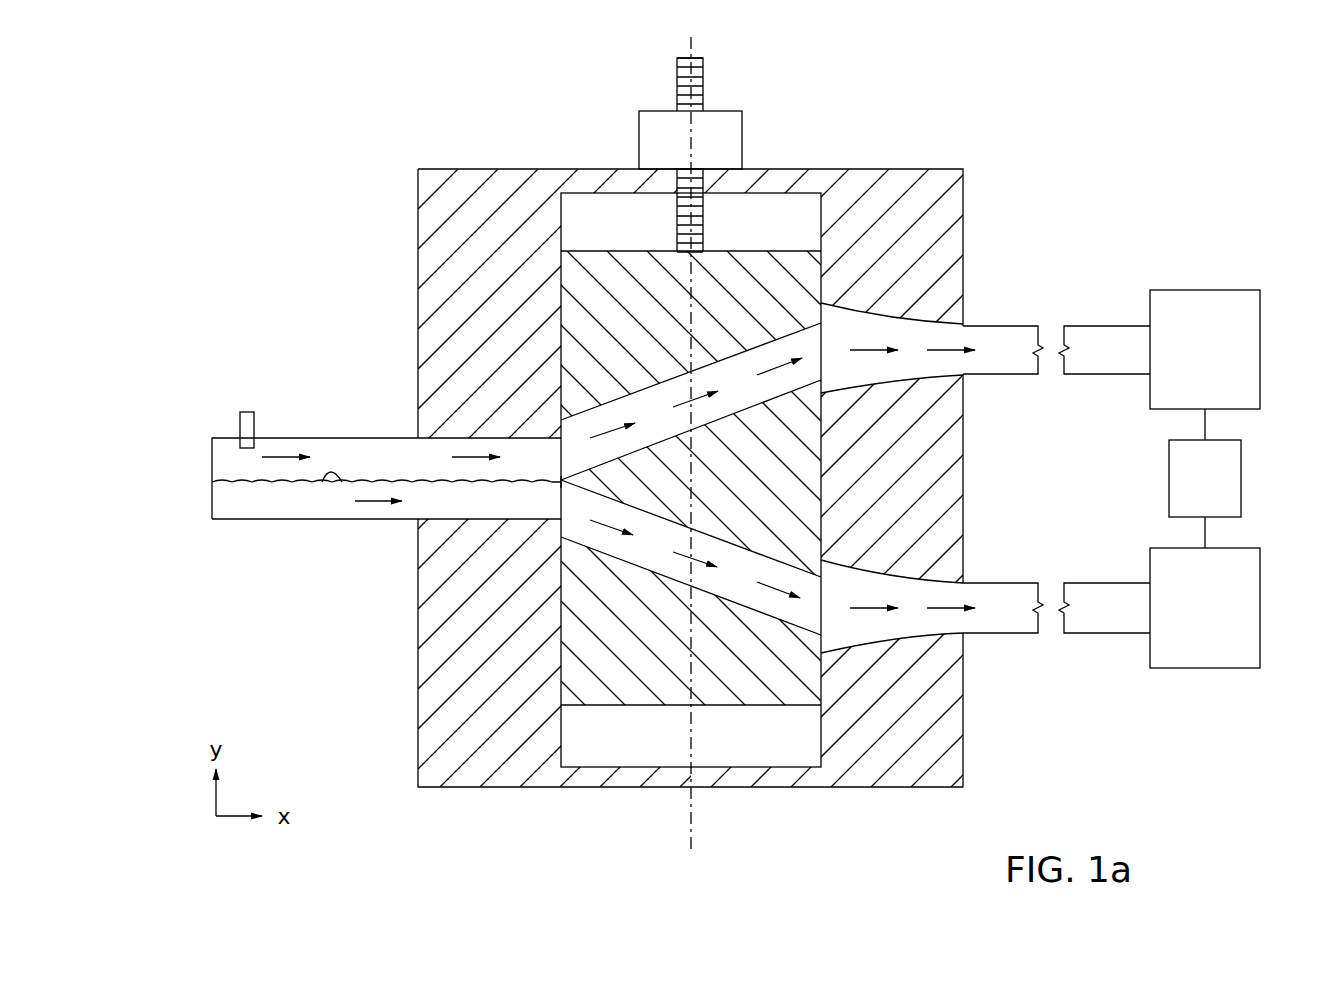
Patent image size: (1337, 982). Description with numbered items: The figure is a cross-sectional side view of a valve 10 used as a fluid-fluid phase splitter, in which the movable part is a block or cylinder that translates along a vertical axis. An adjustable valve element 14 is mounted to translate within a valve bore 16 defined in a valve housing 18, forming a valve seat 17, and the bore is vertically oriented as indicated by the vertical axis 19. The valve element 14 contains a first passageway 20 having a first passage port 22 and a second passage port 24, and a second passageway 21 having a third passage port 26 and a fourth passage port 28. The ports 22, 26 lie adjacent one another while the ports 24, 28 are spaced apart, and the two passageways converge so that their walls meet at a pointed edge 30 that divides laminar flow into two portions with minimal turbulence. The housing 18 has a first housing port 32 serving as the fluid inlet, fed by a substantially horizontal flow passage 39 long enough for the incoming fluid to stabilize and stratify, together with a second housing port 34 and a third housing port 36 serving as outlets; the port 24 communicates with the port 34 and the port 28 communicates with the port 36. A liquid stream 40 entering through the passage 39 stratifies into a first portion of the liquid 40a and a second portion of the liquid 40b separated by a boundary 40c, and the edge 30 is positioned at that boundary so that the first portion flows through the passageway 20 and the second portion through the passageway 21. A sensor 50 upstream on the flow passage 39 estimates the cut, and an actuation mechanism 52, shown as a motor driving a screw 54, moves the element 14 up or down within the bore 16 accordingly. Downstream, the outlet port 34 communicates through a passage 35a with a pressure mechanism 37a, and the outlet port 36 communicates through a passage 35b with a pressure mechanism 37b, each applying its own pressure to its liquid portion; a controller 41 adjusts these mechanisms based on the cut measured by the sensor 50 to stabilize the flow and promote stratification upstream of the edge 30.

The valve 10 is at (979, 114).
The adjustable valve element 14 is at (561, 300).
The valve bore 16 is at (560, 220).
The valve seat 17 is at (670, 755).
The valve housing 18 is at (418, 697).
The vertical axis 19 is at (693, 815).
The first passageway 20 is at (659, 403).
The second passageway 21 is at (655, 548).
The first passage port 22 is at (573, 454).
The second passage port 24 is at (810, 363).
The third passage port 26 is at (560, 497).
The fourth passage port 28 is at (823, 560).
The edge 30 is at (560, 482).
The first housing port 32 is at (572, 512).
The second housing port 34 is at (822, 304).
The passage 35a is at (1000, 345).
The passage 35b is at (998, 612).
The third housing port 36 is at (822, 653).
The mechanism 37a is at (1202, 290).
The mechanism 37b is at (1213, 668).
The flow passage 39 is at (274, 520).
The liquid stream 40 is at (227, 480).
The first portion of the liquid 40a is at (347, 457).
The second portion of the liquid 40b is at (248, 505).
The boundary 40c is at (322, 482).
The controller 41 is at (1169, 478).
The sensor 50 is at (245, 412).
The actuation mechanism 52 is at (658, 111).
The screw 54 is at (705, 78).